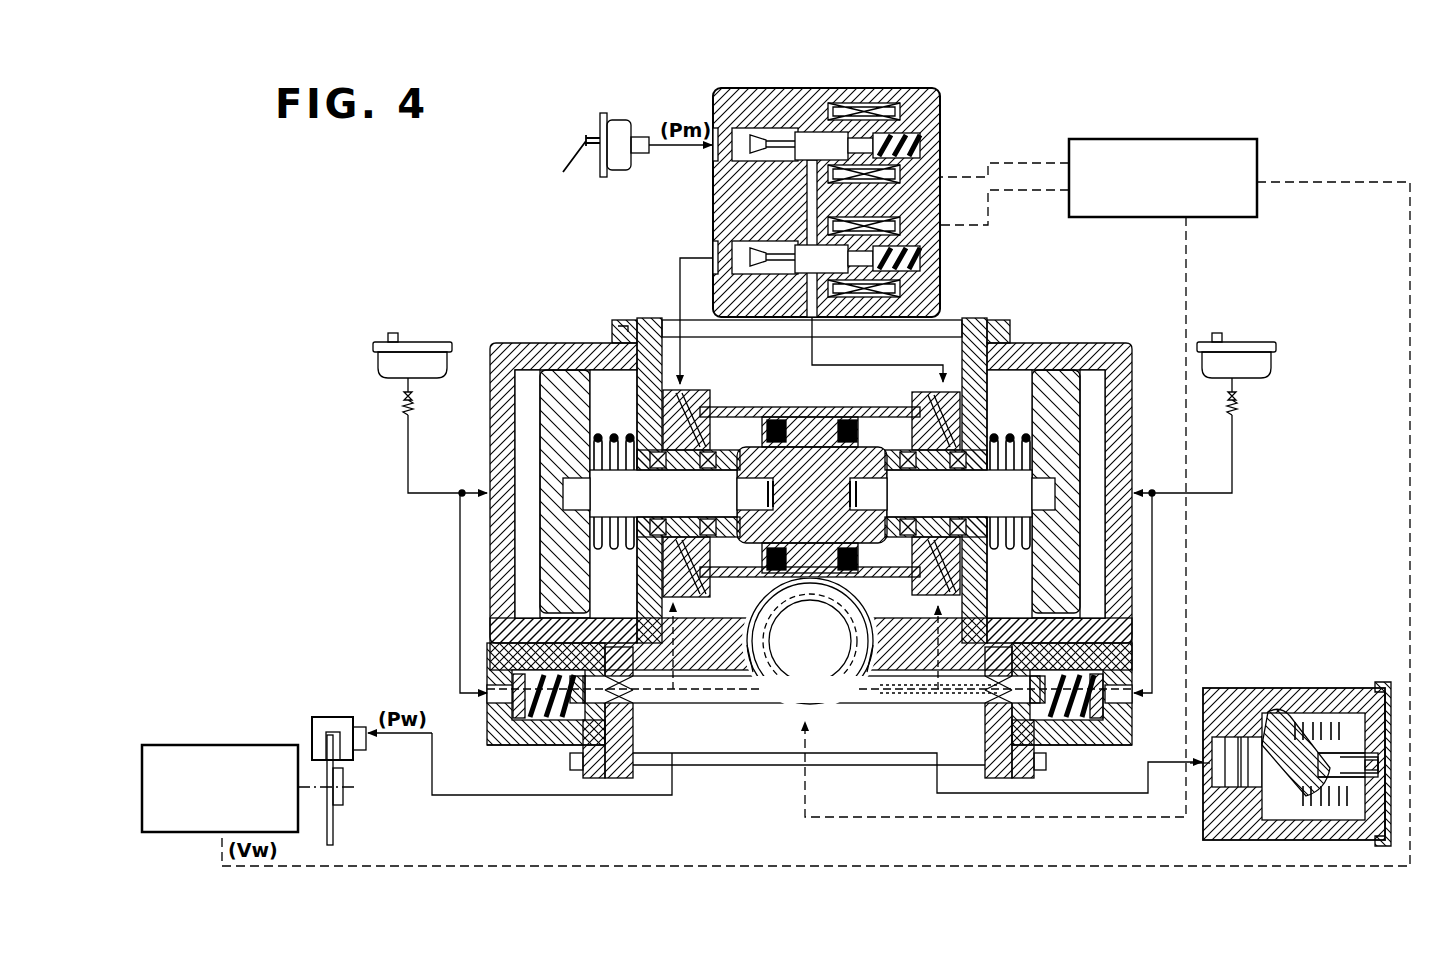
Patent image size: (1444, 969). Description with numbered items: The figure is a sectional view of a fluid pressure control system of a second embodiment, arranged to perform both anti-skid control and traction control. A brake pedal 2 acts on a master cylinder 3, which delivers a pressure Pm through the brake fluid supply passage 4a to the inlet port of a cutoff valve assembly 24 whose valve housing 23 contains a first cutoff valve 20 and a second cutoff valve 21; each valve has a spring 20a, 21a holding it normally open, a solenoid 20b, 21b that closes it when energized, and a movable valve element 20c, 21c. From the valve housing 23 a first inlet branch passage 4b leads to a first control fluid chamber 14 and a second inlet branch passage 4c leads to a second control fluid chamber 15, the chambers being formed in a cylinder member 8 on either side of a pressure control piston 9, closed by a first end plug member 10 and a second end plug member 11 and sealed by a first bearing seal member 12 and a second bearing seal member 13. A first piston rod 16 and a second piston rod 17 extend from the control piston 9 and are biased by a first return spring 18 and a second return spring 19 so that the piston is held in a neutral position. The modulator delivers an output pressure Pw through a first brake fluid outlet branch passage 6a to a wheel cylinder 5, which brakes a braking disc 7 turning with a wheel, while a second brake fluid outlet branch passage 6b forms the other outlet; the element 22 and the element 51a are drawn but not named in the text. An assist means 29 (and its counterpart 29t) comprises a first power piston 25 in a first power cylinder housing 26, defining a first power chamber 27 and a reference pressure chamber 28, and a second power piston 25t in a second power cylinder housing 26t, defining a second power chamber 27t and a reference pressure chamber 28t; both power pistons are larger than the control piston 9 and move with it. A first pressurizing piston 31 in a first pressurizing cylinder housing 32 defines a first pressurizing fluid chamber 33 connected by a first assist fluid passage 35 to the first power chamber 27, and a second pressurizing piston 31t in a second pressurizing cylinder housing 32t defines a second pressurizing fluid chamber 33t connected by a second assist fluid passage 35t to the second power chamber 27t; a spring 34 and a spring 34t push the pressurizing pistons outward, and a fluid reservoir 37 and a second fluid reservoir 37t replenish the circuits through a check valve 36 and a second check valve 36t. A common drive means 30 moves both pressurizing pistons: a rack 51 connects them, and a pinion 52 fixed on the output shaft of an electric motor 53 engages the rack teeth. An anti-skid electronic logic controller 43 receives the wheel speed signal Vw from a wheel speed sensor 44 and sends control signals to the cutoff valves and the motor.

The brake pedal 2 is at (572, 168).
The master cylinder 3 is at (627, 132).
The brake fluid supply passage 4a is at (686, 148).
The first inlet branch passage 4b is at (680, 265).
The second inlet branch passage 4c is at (812, 352).
The wheel cylinder 5 is at (335, 717).
The first brake fluid outlet branch passage 6a is at (500, 795).
The second brake fluid outlet branch passage 6b is at (936, 780).
The braking disc 7 is at (342, 832).
The cylinder member 8 is at (752, 407).
The pressure control piston 9 is at (800, 428).
The first end plug member 10 is at (690, 395).
The second end plug member 11 is at (918, 400).
The first bearing seal member 12 is at (645, 322).
The second bearing seal member 13 is at (950, 365).
The first control fluid chamber 14 is at (741, 442).
The second control fluid chamber 15 is at (903, 442).
The first piston rod 16 is at (668, 493).
The second piston rod 17 is at (947, 506).
The first return spring 18 is at (600, 436).
The second return spring 19 is at (995, 436).
The first cutoff valve 20 is at (908, 122).
The spring 20a is at (942, 137).
The solenoid 20b is at (872, 103).
The movable valve element 20c is at (792, 128).
The second cutoff valve 21 is at (871, 245).
The spring 21a is at (942, 255).
The solenoid 21b is at (942, 288).
The movable valve element 21c is at (800, 242).
The relief valve 22 is at (1268, 688).
The valve housing 23 is at (818, 132).
The cutoff valve assembly 24 is at (871, 189).
The first power piston 25 is at (572, 370).
The second power piston 25t is at (1052, 370).
The first power cylinder housing 26 is at (515, 343).
The second power cylinder housing 26t is at (1120, 343).
The first power chamber 27 is at (527, 455).
The second power chamber 27t is at (1093, 455).
The reference pressure chamber 28 is at (624, 592).
The reference pressure chamber 28t is at (1028, 592).
The assist means 29 is at (486, 746).
The check valve assembly 29t is at (1050, 750).
The drive means 30 is at (820, 713).
The first pressurizing piston 31 is at (605, 778).
The second pressurizing piston 31t is at (1017, 722).
The first pressurizing cylinder housing 32 is at (492, 740).
The second pressurizing cylinder housing 32t is at (1120, 740).
The first pressurizing fluid chamber 33 is at (560, 720).
The second pressurizing fluid chamber 33t is at (1090, 720).
The spring 34 is at (528, 720).
The spring 34t is at (1070, 720).
The first assist fluid passage 35 is at (460, 540).
The second assist fluid passage 35t is at (1152, 540).
The check valve 36 is at (404, 398).
The second check valve 36t is at (1236, 398).
The fluid reservoir 37 is at (423, 342).
The second fluid reservoir 37t is at (1240, 342).
The anti-skid electronic logic controller 43 is at (1163, 139).
The wheel speed sensor 44 is at (225, 745).
The rack 51 is at (718, 705).
The threaded portion 51a is at (906, 705).
The pinion 52 is at (826, 664).
The electric motor 53 is at (768, 676).